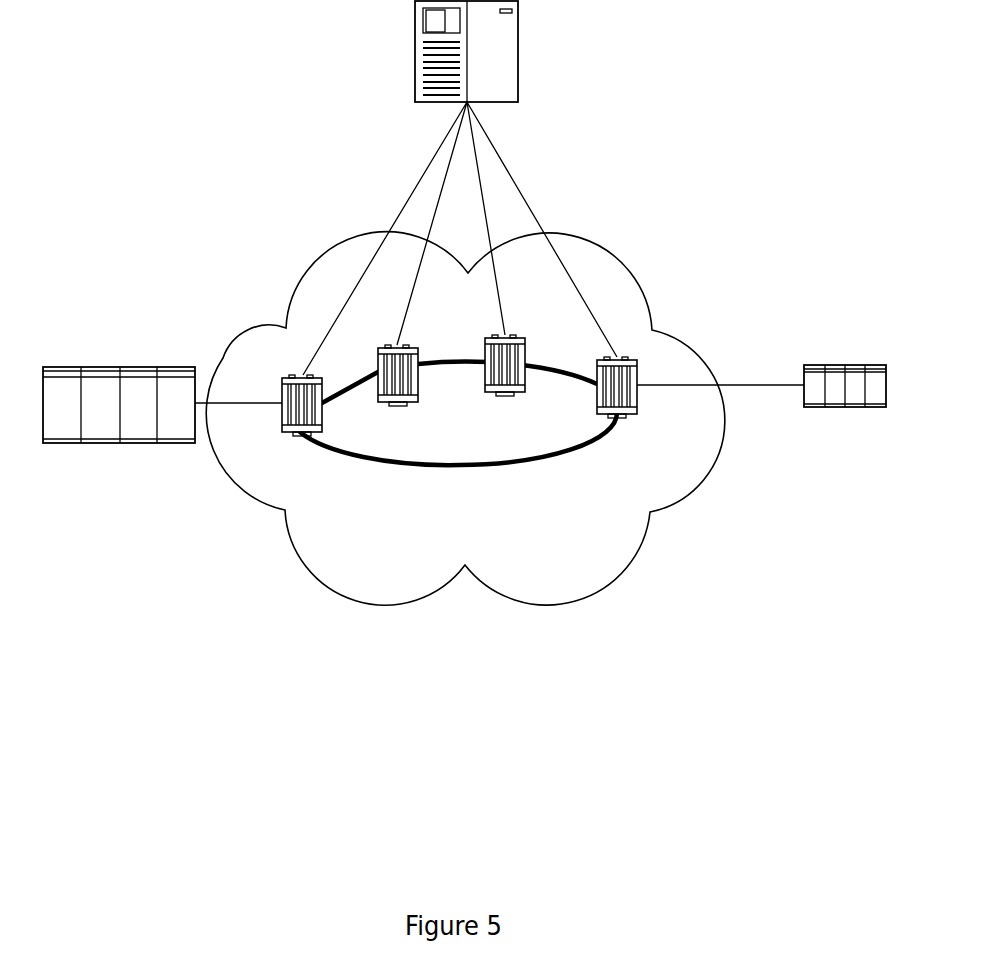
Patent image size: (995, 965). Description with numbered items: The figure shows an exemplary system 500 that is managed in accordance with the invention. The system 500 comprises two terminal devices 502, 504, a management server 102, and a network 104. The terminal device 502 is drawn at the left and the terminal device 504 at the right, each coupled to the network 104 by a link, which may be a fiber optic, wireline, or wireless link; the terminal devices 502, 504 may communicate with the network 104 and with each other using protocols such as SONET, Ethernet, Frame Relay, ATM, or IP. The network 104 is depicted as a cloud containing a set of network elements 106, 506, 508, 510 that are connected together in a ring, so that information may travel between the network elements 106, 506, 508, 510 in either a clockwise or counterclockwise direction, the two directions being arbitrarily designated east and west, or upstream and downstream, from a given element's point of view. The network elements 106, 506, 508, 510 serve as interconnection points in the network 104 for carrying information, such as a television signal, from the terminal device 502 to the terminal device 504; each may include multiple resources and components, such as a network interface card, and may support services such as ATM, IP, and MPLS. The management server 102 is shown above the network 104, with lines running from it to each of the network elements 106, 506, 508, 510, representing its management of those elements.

The management server 102 is at (528, 54).
The network 104 is at (465, 418).
The network element 106 is at (523, 349).
The system 500 is at (464, 317).
The terminal device 502 is at (112, 449).
The terminal device 504 is at (841, 418).
The network element 506 is at (292, 424).
The network element 508 is at (412, 389).
The network element 510 is at (639, 405).